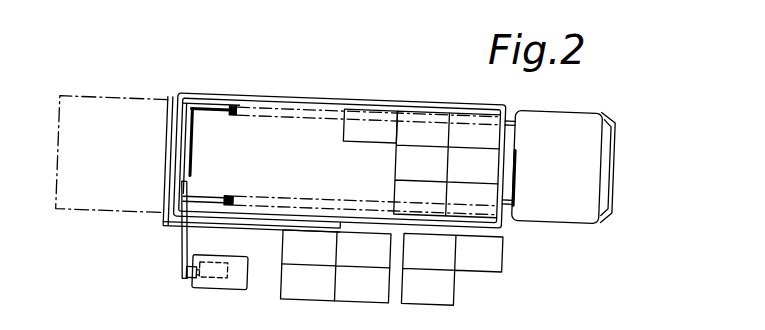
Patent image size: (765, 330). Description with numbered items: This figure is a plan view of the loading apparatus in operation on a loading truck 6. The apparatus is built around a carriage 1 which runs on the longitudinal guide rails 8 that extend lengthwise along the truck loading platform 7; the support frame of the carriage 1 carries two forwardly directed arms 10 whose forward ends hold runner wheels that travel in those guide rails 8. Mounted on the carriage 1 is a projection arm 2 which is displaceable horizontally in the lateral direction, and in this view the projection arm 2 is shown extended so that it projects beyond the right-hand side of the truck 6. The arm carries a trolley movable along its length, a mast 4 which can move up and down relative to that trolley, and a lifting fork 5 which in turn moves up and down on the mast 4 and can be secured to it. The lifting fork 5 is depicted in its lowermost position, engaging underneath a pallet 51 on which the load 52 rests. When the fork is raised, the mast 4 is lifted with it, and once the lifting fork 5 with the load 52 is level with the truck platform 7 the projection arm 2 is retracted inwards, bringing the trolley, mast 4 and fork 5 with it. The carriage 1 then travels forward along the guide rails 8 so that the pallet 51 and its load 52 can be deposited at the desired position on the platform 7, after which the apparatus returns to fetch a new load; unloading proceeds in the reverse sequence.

The carriage 1 is at (213, 149).
The projection arm 2 is at (155, 228).
The mast 4 is at (157, 281).
The lifting fork 5 is at (176, 291).
The loading truck 6 is at (340, 132).
The truck loading surface or platform 7 is at (368, 130).
The longitudinal guide rails 8 is at (368, 127).
The forwardly directed arms 10 is at (228, 124).
The pallet 51 is at (202, 294).
The load 52 is at (222, 292).